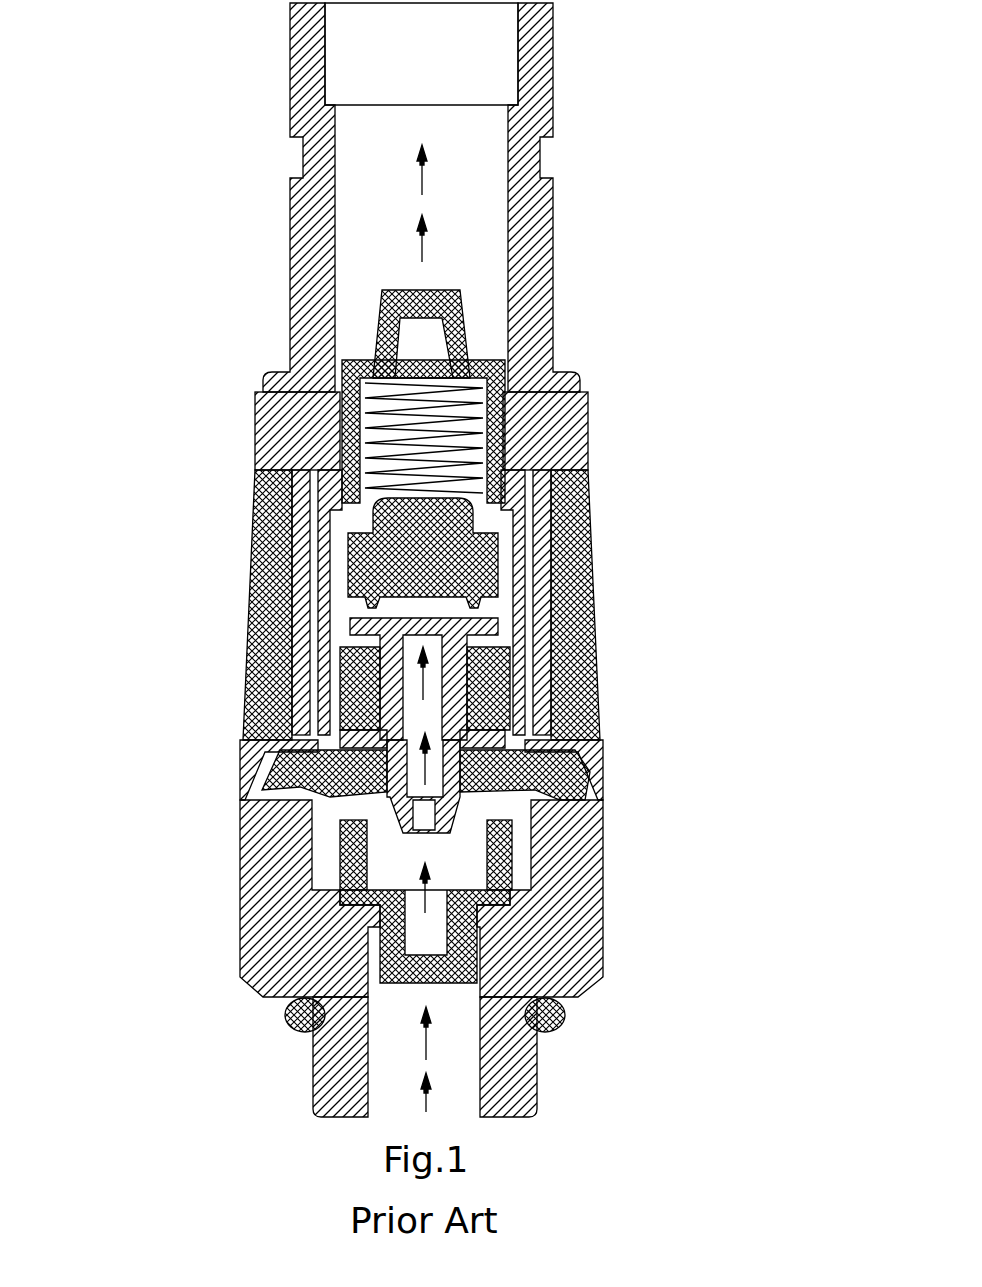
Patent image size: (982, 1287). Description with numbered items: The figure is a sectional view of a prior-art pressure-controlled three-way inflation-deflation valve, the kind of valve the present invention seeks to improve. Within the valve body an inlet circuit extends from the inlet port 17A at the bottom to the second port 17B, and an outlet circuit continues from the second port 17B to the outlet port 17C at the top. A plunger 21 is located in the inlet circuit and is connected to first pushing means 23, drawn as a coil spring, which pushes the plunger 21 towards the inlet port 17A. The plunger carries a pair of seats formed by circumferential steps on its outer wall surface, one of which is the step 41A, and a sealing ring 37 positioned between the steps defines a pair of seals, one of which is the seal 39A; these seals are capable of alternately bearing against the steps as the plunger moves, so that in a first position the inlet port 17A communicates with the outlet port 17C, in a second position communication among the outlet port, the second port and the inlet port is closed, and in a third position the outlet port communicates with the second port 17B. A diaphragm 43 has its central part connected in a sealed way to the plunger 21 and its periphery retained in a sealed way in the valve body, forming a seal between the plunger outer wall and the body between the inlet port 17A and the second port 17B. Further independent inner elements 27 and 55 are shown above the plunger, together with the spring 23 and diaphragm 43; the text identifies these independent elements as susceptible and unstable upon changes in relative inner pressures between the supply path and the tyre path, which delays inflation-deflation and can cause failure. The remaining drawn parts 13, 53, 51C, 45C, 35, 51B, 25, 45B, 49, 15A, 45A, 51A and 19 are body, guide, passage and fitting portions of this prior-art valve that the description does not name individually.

The outlet port 17C is at (413, 45).
The guide member 53 is at (378, 298).
The upper bore 51C is at (474, 284).
The independent inner element 55 is at (355, 393).
The upper body section 45C is at (533, 413).
The valve body 13 is at (250, 444).
The first pushing means 23 is at (455, 467).
The independent inner element 27 is at (488, 522).
The valve stem 35 is at (378, 690).
The middle body portion 51B is at (600, 618).
The sealing ring 37 is at (495, 688).
The stem passage 25 is at (432, 707).
The seal 39A is at (357, 722).
The plunger 21 is at (440, 743).
The second port 17B is at (302, 733).
The middle body section 45B is at (602, 770).
The circumferential step 41A is at (340, 748).
The diaphragm 43 is at (547, 789).
The seal ring 49 is at (340, 760).
The chamber 15A is at (396, 852).
The lower body section 45A is at (560, 945).
The valve seat 51A is at (468, 960).
The inlet nipple 19 is at (355, 1080).
The inlet port 17A is at (455, 1085).